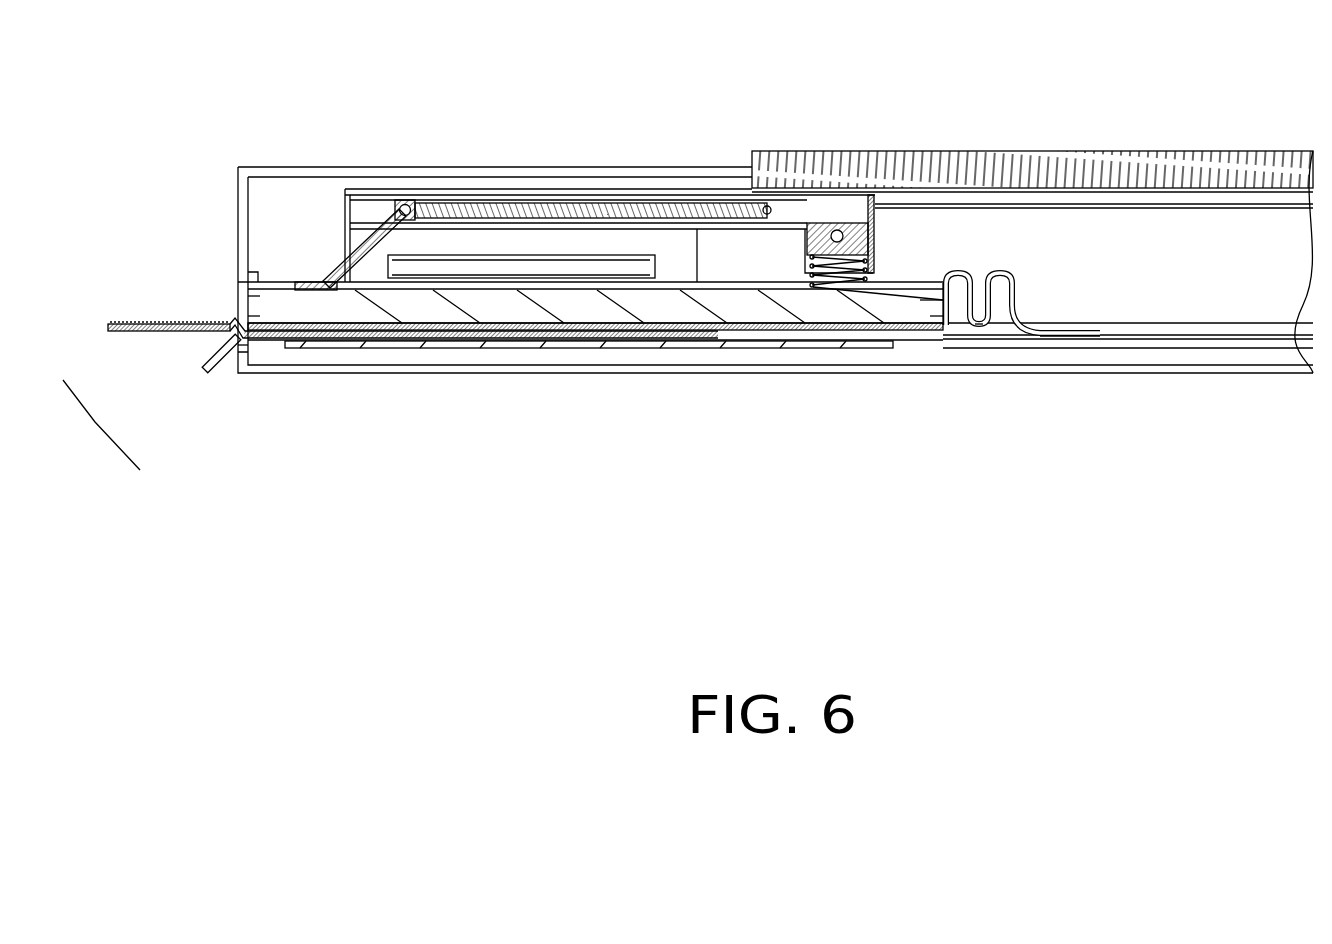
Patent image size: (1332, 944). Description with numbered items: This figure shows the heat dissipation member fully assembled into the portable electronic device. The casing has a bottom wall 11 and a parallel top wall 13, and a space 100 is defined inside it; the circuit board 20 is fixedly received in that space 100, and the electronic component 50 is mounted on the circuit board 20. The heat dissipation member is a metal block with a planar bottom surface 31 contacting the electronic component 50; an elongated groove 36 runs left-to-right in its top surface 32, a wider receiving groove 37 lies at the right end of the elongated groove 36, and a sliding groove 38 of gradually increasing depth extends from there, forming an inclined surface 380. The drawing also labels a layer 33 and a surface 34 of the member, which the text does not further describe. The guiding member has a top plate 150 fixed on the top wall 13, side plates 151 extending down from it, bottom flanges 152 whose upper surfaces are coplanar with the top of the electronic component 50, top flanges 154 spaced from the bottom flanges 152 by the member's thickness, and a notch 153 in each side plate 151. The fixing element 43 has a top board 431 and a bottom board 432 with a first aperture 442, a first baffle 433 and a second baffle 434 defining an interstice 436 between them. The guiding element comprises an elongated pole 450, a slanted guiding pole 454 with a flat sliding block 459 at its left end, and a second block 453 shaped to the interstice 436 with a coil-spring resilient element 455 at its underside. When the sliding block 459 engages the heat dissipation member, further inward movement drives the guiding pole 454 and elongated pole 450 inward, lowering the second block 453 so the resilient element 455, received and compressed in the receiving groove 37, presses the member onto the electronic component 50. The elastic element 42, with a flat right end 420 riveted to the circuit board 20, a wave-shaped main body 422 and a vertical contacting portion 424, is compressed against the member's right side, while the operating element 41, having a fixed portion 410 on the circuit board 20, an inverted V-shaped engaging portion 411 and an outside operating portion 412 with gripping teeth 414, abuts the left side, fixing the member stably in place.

The bottom wall 11 is at (1267, 370).
The top wall 13 is at (268, 173).
The circuit board 20 is at (1177, 348).
The bottom surface 31 is at (717, 327).
The top surface 32 is at (497, 312).
The adhesive layer 33 is at (760, 290).
The top surface 34 is at (273, 305).
The elongated groove 36 is at (385, 290).
The receiving groove 37 is at (842, 289).
The sliding groove 38 is at (930, 286).
The operating element 41 is at (100, 425).
The elastic element 42 is at (1090, 462).
The fixing element 43 is at (700, 190).
The electronic component 50 is at (800, 331).
The space 100 is at (1200, 253).
The top plate 150 is at (1133, 183).
The side plates 151 is at (620, 242).
The bottom flange 152 is at (640, 345).
The notch 153 is at (443, 265).
The top flange 154 is at (572, 278).
The inclined surface 380 is at (918, 300).
The fixed portion 410 is at (265, 342).
The engaging portion 411 is at (212, 335).
The operating portion 412 is at (160, 331).
The teeth 414 is at (132, 324).
The flat right end 420 is at (1080, 337).
The main body 422 is at (988, 327).
The contacting portion 424 is at (941, 327).
The top board 431 is at (385, 193).
The bottom board 432 is at (537, 222).
The first baffle 433 is at (817, 205).
The second baffle 434 is at (877, 248).
The interstice 436 is at (803, 248).
The first aperture 442 is at (422, 203).
The elongated pole 450 is at (476, 205).
The second block 453 is at (853, 226).
The guiding pole 454 is at (308, 282).
The resilient element 455 is at (910, 285).
The sliding block 459 is at (320, 323).